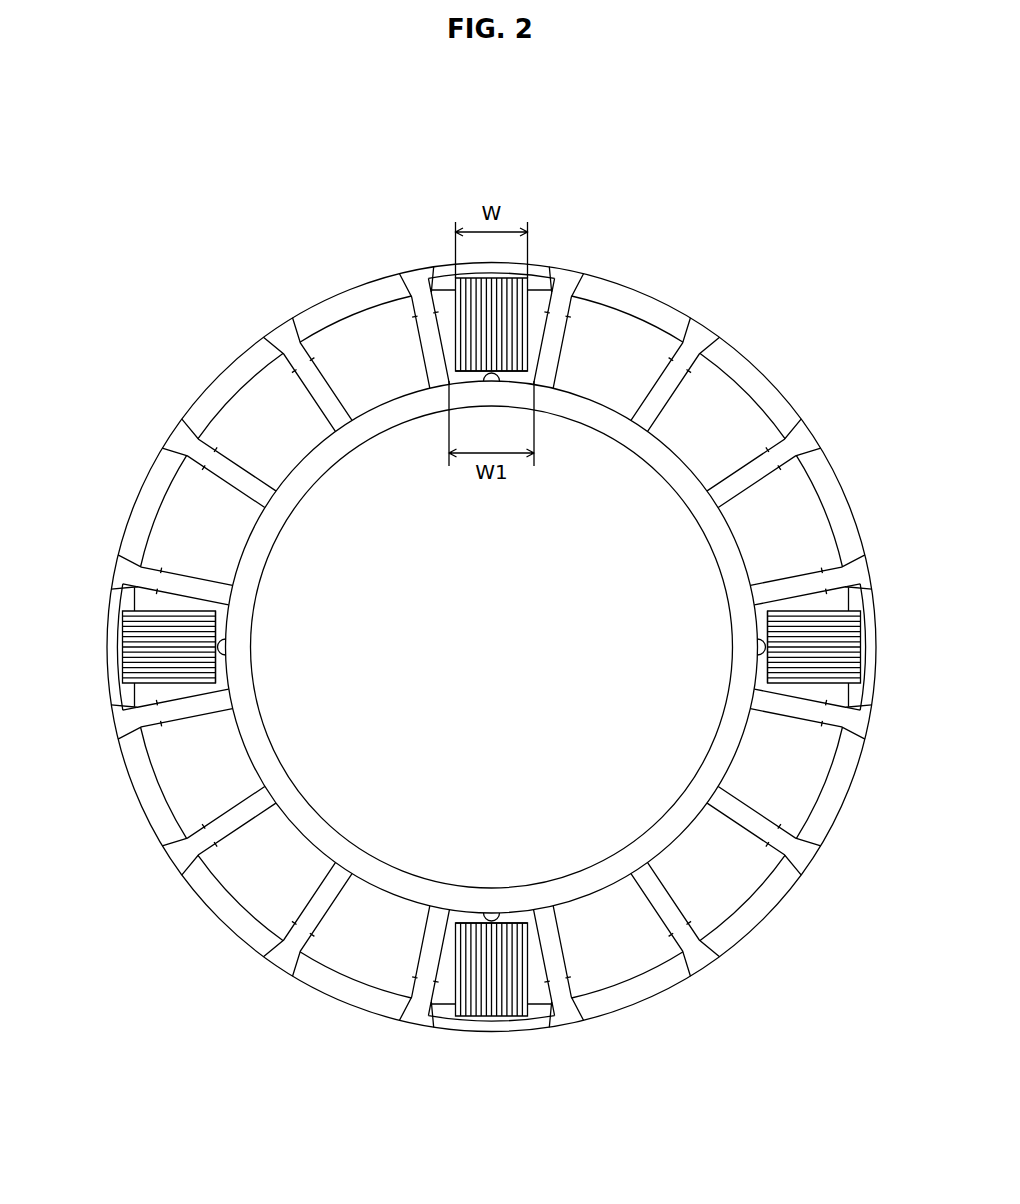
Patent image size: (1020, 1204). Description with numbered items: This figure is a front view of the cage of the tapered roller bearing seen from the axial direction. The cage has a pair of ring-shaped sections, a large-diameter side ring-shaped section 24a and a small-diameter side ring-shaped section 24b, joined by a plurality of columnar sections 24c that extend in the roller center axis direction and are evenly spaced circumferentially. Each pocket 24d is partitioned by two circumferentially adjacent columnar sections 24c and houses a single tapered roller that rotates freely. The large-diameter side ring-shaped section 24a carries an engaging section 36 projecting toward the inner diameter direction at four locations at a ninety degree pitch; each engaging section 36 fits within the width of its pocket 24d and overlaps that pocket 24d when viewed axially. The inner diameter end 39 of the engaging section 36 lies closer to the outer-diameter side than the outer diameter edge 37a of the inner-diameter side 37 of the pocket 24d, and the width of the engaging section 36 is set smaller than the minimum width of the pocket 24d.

The large-diameter side ring-shaped section 24a is at (845, 493).
The small-diameter side ring-shaped section 24b is at (712, 552).
The columnar section 24c is at (337, 397).
The pocket 24d is at (738, 410).
The engaging section 36 is at (505, 315).
The inner-diameter side of the pocket 37 is at (297, 462).
The outer diameter edge of the inner-diameter side of the pocket 37a is at (503, 382).
The inner diameter end of the engaging section 39 is at (480, 373).